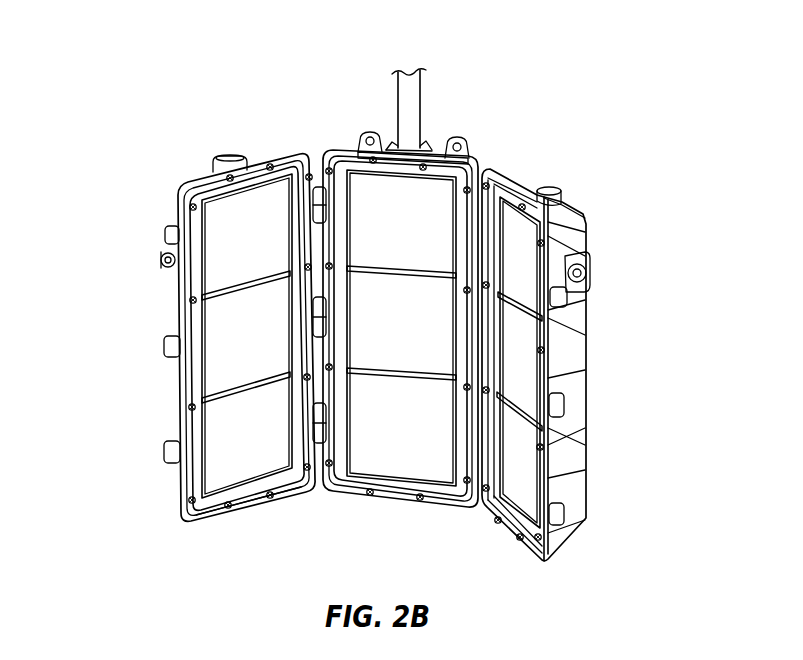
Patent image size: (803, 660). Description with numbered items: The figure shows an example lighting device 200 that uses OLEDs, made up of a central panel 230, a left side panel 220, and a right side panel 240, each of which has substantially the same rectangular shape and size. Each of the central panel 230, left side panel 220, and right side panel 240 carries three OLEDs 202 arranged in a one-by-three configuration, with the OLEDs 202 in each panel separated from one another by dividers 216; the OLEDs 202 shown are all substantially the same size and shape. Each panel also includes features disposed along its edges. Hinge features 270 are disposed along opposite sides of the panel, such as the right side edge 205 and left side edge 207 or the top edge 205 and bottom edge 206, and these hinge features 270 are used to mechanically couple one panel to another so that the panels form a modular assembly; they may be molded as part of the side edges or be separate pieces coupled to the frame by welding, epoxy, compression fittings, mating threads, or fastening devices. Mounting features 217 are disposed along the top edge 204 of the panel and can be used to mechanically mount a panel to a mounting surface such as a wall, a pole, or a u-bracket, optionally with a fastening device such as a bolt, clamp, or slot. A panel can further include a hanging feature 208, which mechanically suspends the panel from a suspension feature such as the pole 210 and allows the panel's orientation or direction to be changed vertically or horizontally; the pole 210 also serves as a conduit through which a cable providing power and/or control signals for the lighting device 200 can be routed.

The lighting device 200 is at (551, 65).
The OLEDs 202 is at (422, 334).
The top edge 204 is at (206, 188).
The right side edge 205 is at (561, 437).
The bottom edge 206 is at (214, 514).
The left side edge 207 is at (195, 316).
The hanging feature 208 is at (546, 188).
The pole 210 is at (397, 106).
The dividers 216 is at (521, 305).
The mounting features 217 is at (459, 136).
The left side panel 220 is at (162, 380).
The central panel 230 is at (388, 515).
The right side panel 240 is at (600, 400).
The hinge features 270 is at (168, 457).